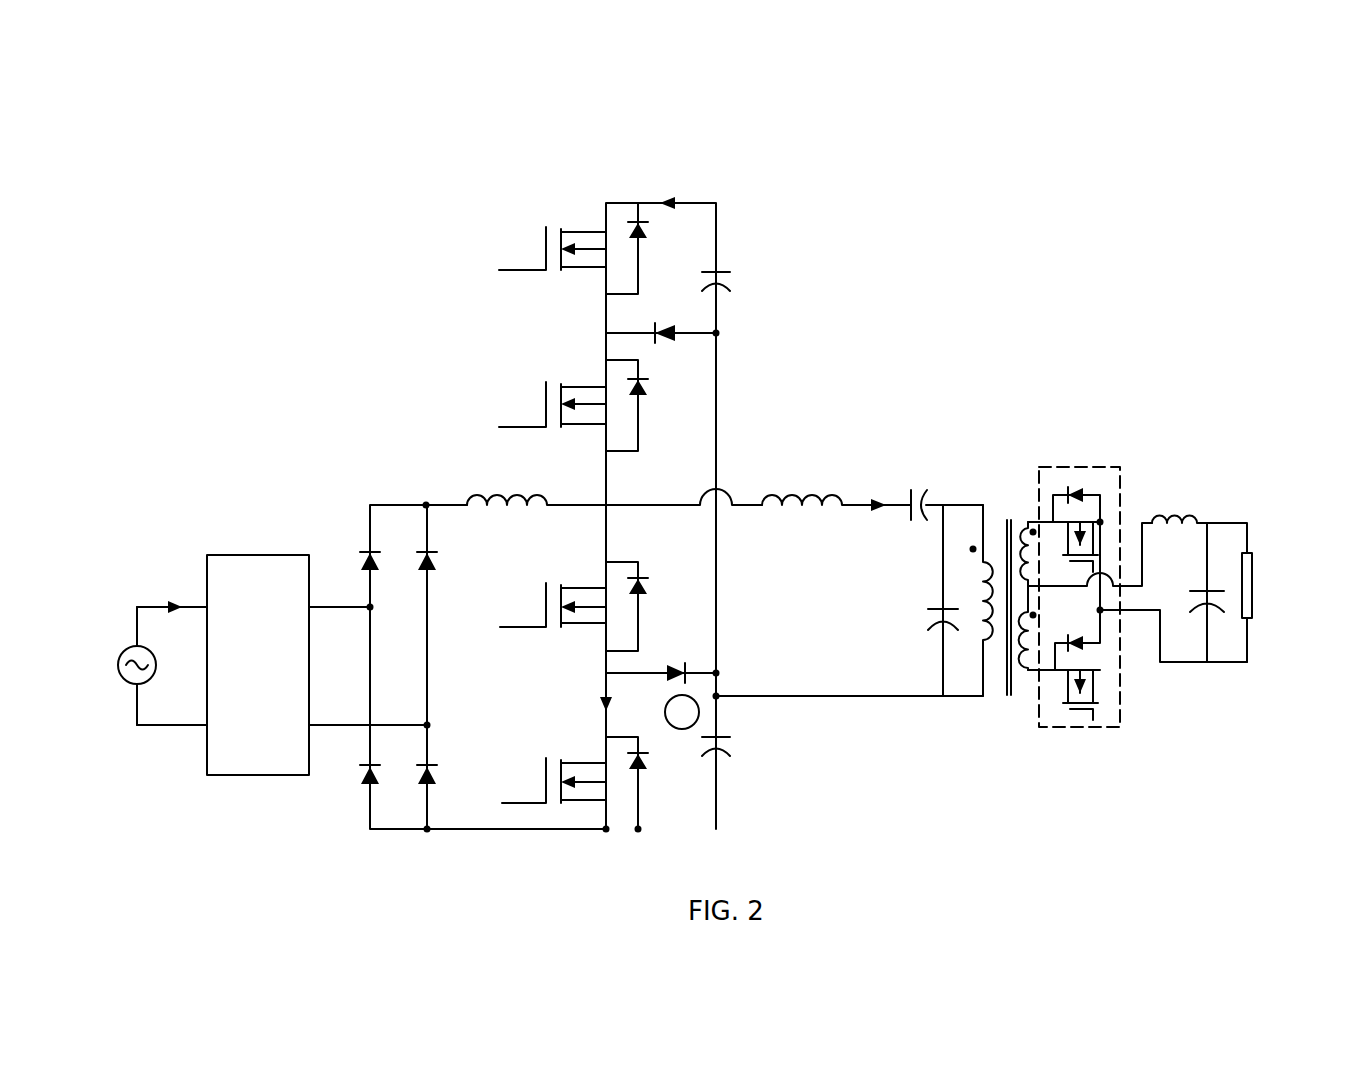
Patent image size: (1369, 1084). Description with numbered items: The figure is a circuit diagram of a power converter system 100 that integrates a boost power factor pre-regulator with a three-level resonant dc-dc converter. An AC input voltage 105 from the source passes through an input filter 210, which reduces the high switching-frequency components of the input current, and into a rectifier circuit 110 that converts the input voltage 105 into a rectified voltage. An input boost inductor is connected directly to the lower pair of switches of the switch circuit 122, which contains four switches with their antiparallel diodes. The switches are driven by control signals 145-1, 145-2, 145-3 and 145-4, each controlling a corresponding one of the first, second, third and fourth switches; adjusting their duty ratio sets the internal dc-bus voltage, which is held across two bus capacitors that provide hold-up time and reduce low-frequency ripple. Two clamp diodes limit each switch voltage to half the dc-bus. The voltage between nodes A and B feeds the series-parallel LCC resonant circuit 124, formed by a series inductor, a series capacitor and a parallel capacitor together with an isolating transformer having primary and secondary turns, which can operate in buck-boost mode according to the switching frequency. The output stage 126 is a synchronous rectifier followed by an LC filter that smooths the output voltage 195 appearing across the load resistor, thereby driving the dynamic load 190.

The power converter system 100 is at (153, 137).
The input voltage 105 is at (148, 606).
The rectifier circuit 110 is at (463, 457).
The switch circuit 122 is at (738, 158).
The resonant circuit 124 is at (975, 455).
The output stage 126 is at (1096, 448).
The control signal 145-1 is at (520, 272).
The control signal 145-2 is at (536, 428).
The control signal 145-3 is at (528, 628).
The control signal 145-4 is at (518, 803).
The dynamic load 190 is at (1253, 610).
The output voltage 195 is at (1227, 523).
The input filter 210 is at (273, 712).